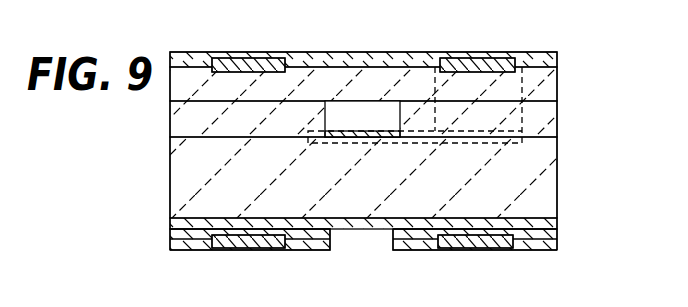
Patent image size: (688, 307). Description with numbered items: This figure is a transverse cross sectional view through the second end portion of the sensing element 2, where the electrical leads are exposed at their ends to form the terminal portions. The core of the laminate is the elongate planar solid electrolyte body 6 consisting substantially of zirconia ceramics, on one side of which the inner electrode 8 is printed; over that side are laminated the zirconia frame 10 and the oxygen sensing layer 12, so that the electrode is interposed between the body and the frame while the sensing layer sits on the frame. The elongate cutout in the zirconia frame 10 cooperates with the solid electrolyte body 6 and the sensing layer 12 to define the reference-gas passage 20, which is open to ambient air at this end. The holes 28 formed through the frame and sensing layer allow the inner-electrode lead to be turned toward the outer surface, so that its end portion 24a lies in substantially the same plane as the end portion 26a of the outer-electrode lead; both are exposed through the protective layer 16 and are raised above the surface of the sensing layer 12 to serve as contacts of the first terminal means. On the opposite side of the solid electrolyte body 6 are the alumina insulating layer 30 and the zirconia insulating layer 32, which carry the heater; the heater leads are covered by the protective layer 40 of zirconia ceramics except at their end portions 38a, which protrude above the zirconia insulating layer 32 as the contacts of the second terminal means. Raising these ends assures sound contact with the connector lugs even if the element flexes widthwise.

The sensing element 2 is at (167, 145).
The solid electrolyte body 6 is at (550, 187).
The inner electrode 8 is at (342, 131).
The zirconia frame 10 is at (543, 127).
The oxygen sensing layer 12 is at (402, 77).
The protective layer 16 is at (538, 57).
The reference-gas passage 20 is at (352, 101).
The end portion of electrical lead 24a is at (488, 58).
The end portion of electrical lead 26a is at (250, 58).
The holes 28 is at (507, 101).
The alumina insulating layer 30 is at (378, 230).
The zirconia insulating layer 32 is at (317, 239).
The end portions of heater leads 38a is at (242, 248).
The protective layer 40 is at (182, 247).